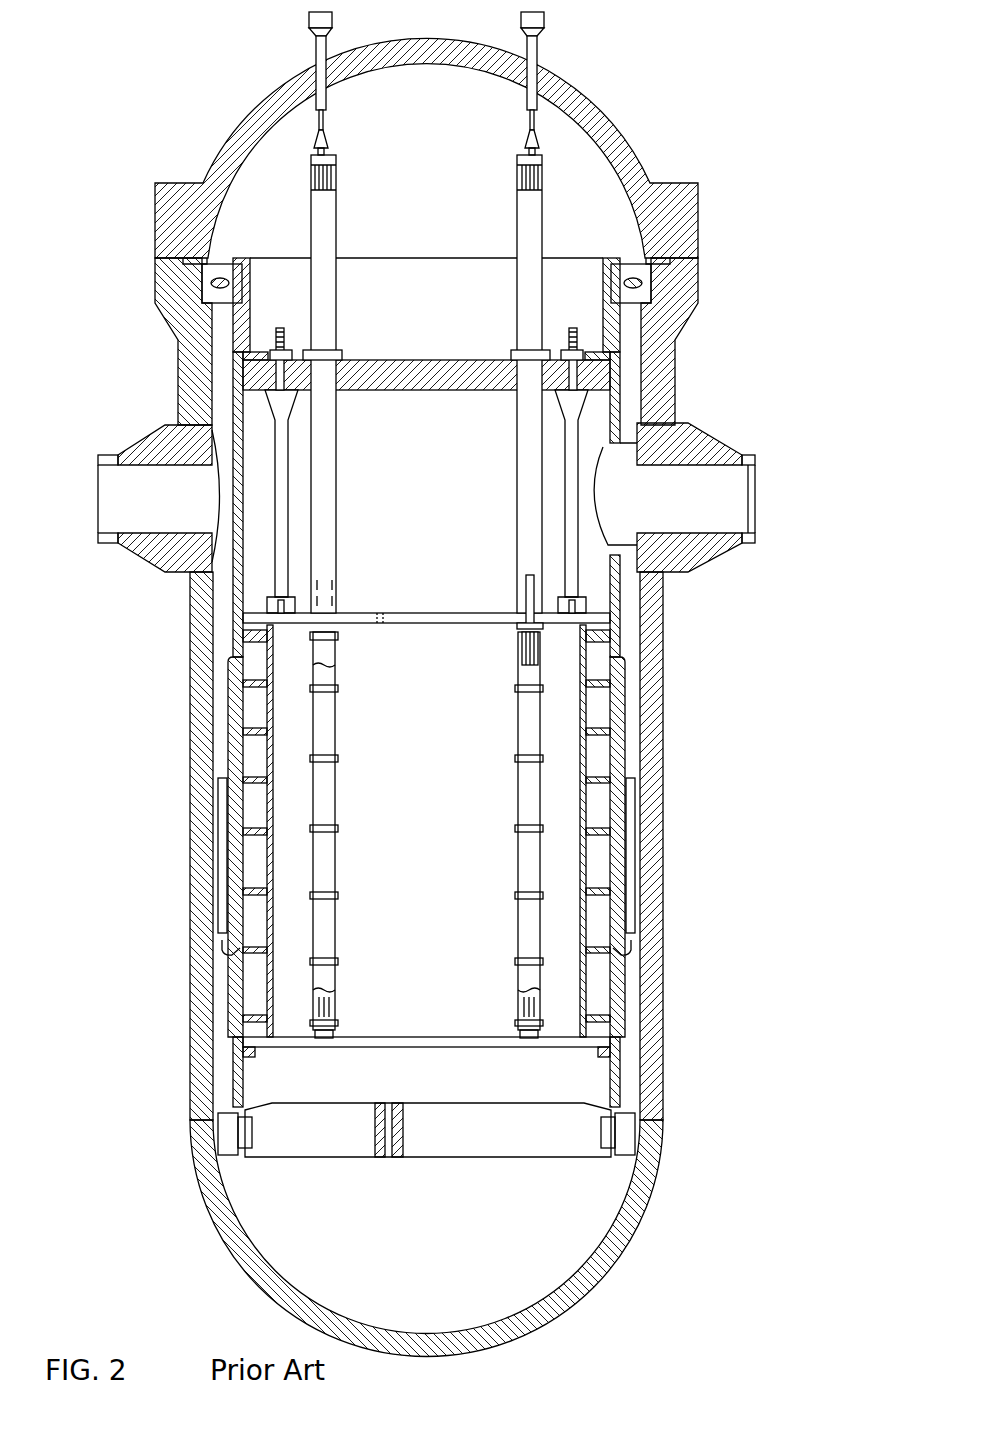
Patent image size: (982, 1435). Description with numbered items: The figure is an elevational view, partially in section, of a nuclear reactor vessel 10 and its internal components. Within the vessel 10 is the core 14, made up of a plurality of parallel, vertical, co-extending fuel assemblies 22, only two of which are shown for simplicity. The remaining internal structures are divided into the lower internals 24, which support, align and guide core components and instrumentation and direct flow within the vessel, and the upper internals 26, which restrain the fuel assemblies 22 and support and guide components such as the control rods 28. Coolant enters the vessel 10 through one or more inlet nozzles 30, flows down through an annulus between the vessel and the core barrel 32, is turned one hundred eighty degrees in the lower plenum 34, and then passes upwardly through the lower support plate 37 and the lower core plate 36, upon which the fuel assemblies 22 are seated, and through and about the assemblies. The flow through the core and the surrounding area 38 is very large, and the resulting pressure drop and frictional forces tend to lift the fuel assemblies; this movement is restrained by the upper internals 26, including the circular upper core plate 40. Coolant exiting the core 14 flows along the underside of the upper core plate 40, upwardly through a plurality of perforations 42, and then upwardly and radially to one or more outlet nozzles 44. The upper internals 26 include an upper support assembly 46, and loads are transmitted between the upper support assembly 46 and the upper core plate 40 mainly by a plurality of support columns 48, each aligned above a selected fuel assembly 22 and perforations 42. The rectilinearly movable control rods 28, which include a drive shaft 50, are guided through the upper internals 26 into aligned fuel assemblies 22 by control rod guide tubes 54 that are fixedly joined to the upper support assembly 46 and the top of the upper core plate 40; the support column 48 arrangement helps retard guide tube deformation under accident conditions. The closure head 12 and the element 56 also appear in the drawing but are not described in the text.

The reactor vessel 10 is at (665, 693).
The closure head 12 is at (696, 223).
The core 14 is at (453, 824).
The fuel assemblies 22 is at (338, 725).
The lower internals 24 is at (453, 1088).
The upper internals 26 is at (451, 471).
The control rods 28 is at (521, 625).
The inlet nozzles 30 is at (135, 430).
The core barrel 32 is at (236, 612).
The lower plenum 34 is at (607, 1213).
The lower core plate 36 is at (497, 1037).
The lower support plate 37 is at (475, 1143).
The surrounding area 38 is at (484, 778).
The upper core plate 40 is at (470, 624).
The perforations 42 is at (381, 612).
The outlet nozzles 44 is at (730, 430).
The upper support assembly 46 is at (605, 258).
The support columns 48 is at (565, 447).
The drive shaft 50 is at (526, 578).
The control rod guide tubes 54 is at (332, 438).
The fuel assembly top nozzle 56 is at (545, 622).